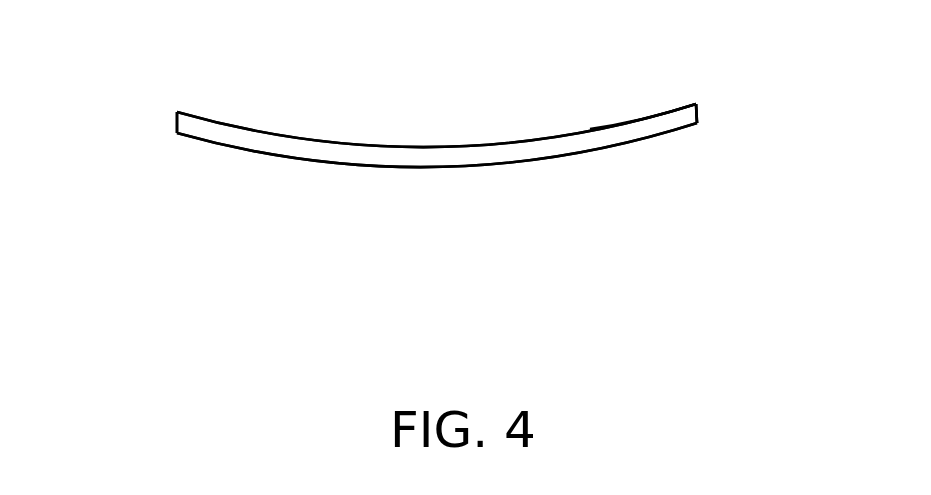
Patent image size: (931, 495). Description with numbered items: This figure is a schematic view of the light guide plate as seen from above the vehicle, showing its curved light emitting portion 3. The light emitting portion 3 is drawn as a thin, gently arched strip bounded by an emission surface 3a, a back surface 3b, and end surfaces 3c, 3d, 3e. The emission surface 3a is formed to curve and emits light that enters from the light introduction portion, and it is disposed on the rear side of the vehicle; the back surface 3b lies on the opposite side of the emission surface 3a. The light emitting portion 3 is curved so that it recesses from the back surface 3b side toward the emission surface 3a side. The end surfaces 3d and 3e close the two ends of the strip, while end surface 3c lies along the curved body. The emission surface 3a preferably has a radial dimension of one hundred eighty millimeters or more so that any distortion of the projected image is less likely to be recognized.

The light emitting portion 3 is at (288, 118).
The emission surface 3a is at (450, 168).
The back surface 3b is at (478, 145).
The end surface 3c is at (615, 135).
The end surface 3d is at (697, 116).
The end surface 3e is at (177, 117).